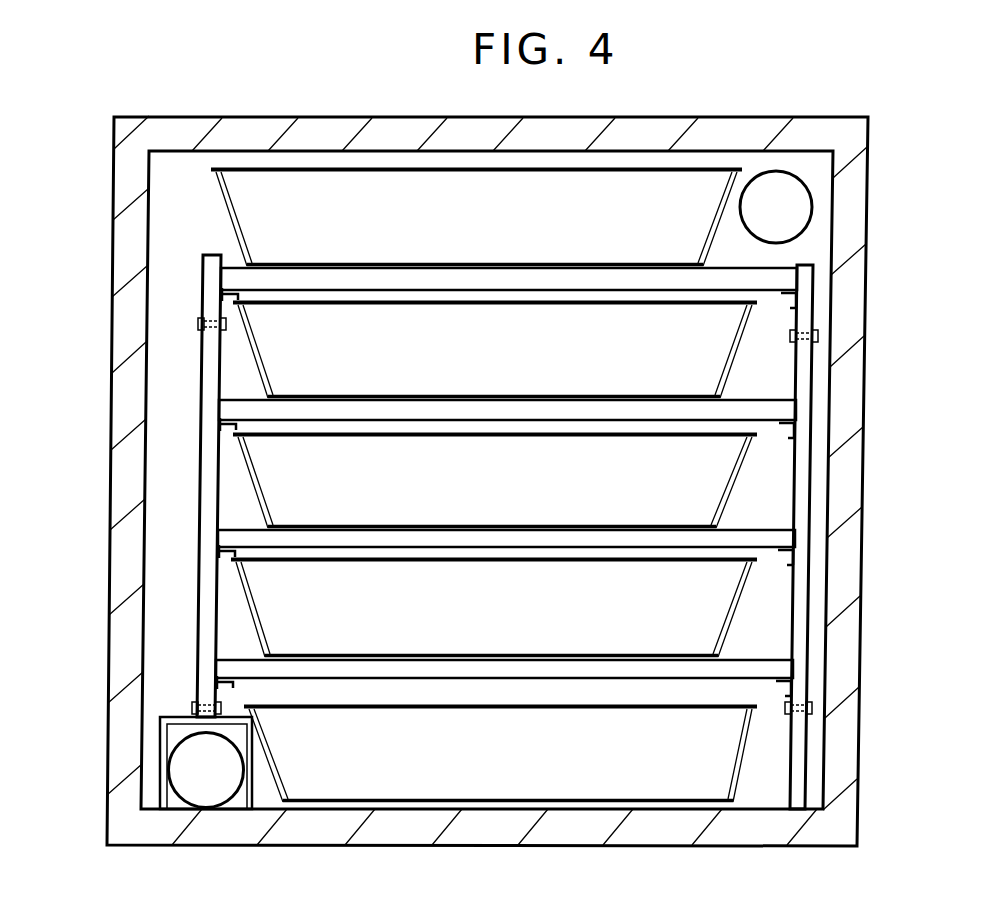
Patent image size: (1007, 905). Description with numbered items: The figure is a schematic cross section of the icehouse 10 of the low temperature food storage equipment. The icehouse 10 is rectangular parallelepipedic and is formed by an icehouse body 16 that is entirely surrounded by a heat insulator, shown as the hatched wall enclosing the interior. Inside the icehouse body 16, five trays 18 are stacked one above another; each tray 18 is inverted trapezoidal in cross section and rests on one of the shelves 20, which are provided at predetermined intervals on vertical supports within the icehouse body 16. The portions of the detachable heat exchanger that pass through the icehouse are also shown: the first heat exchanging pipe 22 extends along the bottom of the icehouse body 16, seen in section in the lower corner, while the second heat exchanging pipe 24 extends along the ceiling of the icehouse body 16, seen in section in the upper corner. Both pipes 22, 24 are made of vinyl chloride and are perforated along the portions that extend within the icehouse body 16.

The icehouse 10 is at (887, 165).
The icehouse body 16 is at (868, 279).
The trays 18 is at (694, 243).
The shelves 20 is at (808, 498).
The first heat exchanging pipe 22 is at (178, 768).
The second heat exchanging pipe 24 is at (795, 212).